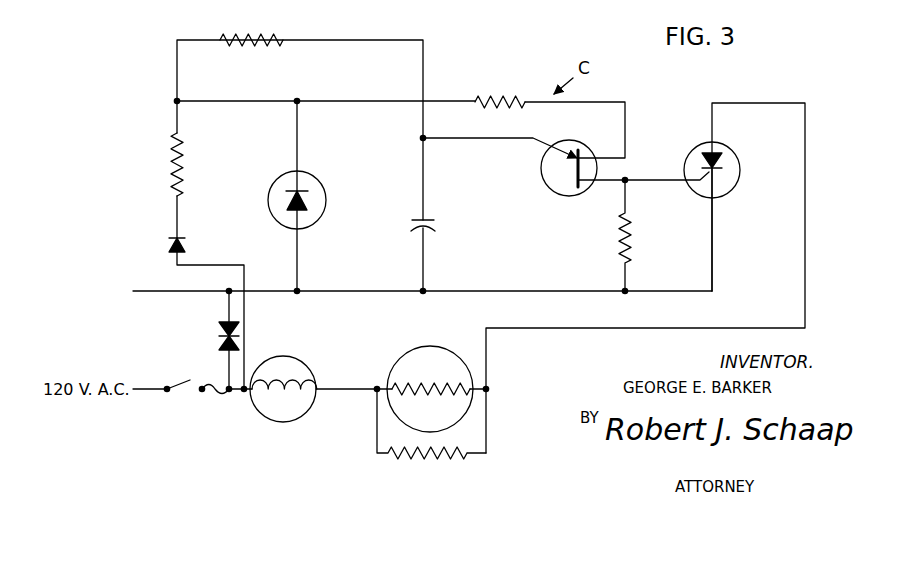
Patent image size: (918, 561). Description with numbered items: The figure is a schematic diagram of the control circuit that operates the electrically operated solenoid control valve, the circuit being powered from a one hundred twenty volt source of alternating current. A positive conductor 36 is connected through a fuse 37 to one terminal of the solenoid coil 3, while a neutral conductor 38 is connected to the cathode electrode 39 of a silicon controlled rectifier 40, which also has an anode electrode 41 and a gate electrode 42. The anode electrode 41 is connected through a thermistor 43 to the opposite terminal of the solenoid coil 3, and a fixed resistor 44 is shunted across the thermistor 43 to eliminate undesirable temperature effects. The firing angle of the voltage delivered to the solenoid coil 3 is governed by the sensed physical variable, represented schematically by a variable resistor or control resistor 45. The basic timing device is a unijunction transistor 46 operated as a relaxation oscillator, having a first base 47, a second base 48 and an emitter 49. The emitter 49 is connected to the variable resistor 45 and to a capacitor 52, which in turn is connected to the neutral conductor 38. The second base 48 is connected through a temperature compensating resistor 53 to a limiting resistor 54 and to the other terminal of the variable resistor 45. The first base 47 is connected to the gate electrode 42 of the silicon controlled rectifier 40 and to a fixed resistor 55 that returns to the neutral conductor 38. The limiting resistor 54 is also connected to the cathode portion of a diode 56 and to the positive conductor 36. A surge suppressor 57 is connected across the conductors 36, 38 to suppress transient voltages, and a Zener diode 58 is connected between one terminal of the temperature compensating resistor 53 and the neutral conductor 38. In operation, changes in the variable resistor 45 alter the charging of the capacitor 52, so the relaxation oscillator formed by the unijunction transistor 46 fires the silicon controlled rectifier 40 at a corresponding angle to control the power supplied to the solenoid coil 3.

The solenoid coil 3 is at (306, 361).
The positive conductor 36 is at (156, 394).
The fuse 37 is at (213, 394).
The neutral conductor 38 is at (152, 289).
The cathode electrode 39 is at (722, 172).
The silicon controlled rectifier 40 is at (736, 148).
The anode electrode 41 is at (704, 150).
The gate electrode 42 is at (703, 176).
The thermistor 43 is at (415, 350).
The fixed resistor 44 is at (415, 459).
The variable resistor 45 is at (247, 28).
The unijunction transistor 46 is at (547, 191).
The base-1 47 is at (575, 181).
The base-2 48 is at (583, 151).
The emitter 49 is at (543, 148).
The capacitor 52 is at (431, 233).
The temperature compensating resistor 53 is at (508, 97).
The limiting resistor 54 is at (182, 178).
The fixed resistor 55 is at (636, 258).
The diode 56 is at (186, 245).
The surge suppressor 57 is at (222, 340).
The Zener diode 58 is at (316, 184).